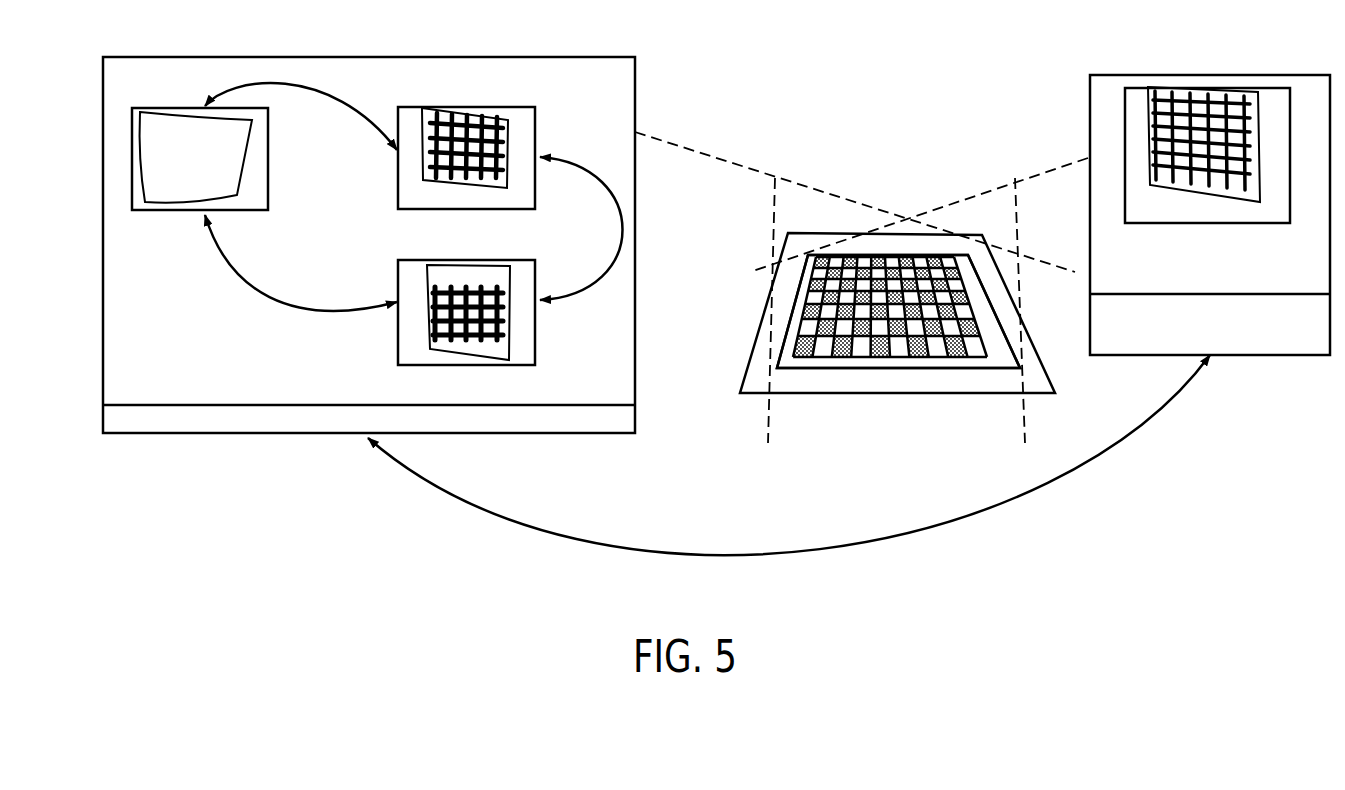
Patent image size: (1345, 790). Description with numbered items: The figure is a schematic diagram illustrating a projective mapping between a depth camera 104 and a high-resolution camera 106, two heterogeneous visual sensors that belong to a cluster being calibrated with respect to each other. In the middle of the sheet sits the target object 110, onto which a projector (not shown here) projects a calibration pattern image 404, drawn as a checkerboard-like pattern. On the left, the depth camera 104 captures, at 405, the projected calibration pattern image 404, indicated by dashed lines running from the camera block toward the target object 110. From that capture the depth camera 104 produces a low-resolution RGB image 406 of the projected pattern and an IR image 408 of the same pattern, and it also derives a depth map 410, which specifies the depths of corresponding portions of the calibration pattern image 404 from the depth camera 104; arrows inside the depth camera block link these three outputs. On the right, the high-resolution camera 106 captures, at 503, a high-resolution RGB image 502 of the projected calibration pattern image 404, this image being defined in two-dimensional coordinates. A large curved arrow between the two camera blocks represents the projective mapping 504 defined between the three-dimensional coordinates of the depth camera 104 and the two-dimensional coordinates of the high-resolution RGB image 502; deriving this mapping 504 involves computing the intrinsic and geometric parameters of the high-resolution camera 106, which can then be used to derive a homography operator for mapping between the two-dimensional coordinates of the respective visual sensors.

The depth camera 104 is at (640, 415).
The high-resolution camera 106 is at (1210, 75).
The target object 110 is at (897, 395).
The calibration pattern image 404 is at (830, 368).
The capture by the depth camera 405 is at (697, 153).
The low-resolution RGB image 406 is at (515, 107).
The IR image 408 is at (523, 365).
The depth map 410 is at (180, 107).
The high-resolution RGB image 502 is at (1125, 108).
The capture by the high-resolution camera 503 is at (1053, 168).
The projective mapping 504 is at (827, 552).